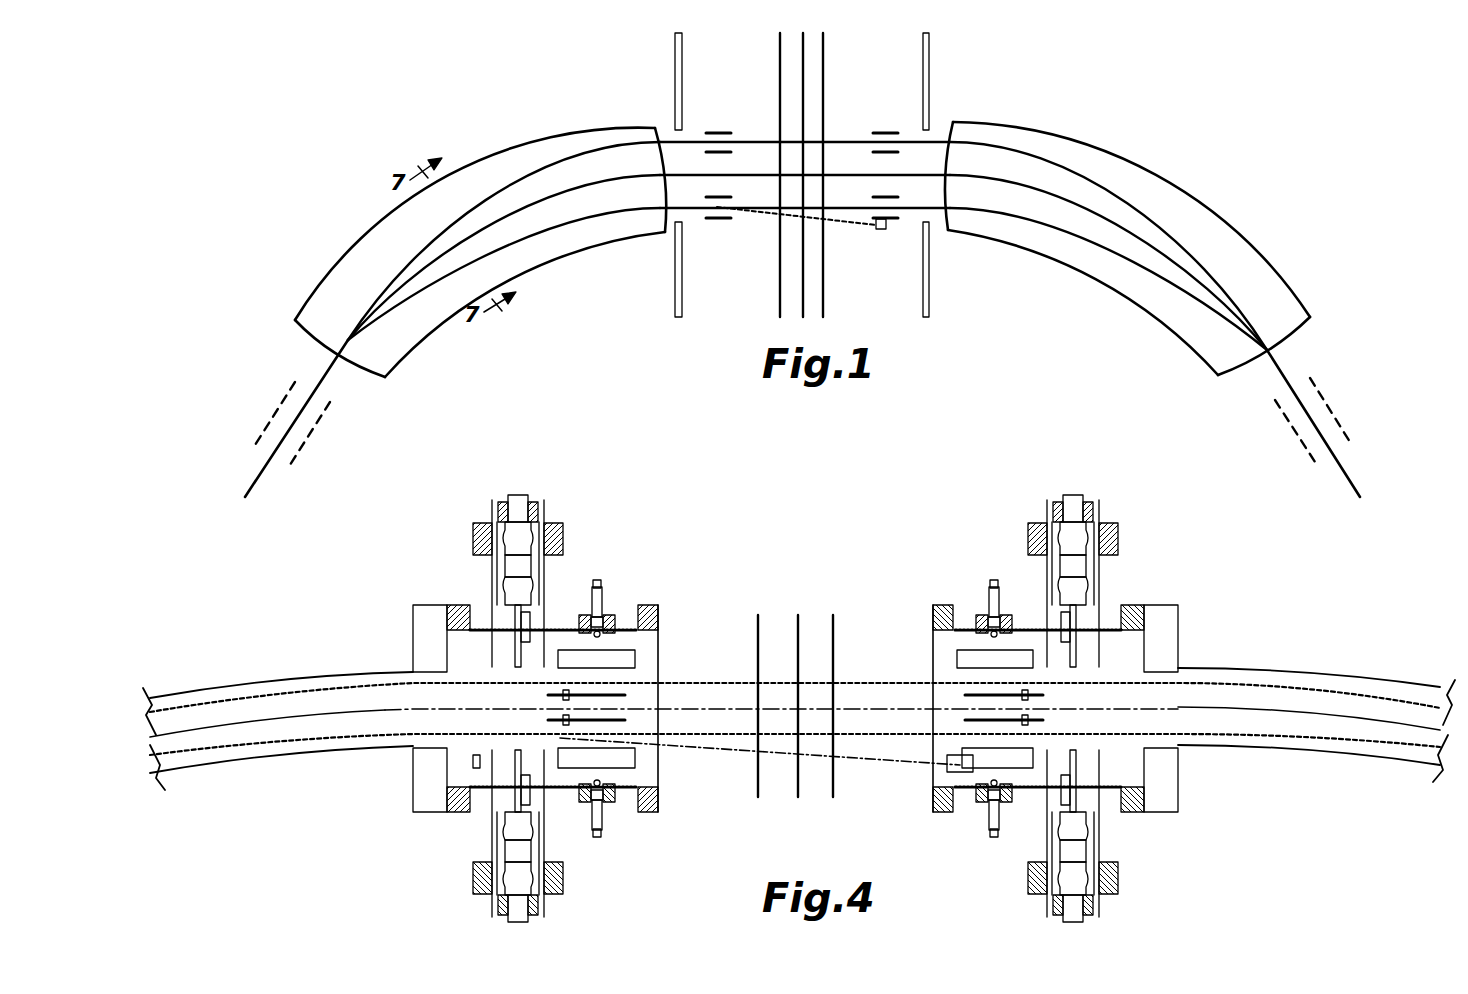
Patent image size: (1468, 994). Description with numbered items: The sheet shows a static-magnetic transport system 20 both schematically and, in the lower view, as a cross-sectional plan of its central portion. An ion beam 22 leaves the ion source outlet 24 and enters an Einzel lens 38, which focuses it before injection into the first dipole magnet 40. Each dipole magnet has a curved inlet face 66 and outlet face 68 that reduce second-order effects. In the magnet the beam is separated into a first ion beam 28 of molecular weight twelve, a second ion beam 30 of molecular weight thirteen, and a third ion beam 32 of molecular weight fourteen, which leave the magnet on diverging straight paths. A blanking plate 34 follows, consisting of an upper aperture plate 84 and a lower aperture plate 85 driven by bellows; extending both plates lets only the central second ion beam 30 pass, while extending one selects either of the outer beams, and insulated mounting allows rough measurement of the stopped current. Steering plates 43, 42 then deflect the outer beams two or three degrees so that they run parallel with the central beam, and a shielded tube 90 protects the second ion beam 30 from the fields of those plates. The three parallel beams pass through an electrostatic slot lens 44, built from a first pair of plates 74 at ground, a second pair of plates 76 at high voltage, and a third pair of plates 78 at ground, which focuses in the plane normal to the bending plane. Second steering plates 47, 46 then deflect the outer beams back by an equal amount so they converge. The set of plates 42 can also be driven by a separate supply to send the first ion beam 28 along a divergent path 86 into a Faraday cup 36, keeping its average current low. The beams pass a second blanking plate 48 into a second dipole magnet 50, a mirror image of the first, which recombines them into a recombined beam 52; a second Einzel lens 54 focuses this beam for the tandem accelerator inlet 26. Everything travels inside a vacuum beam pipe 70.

In FIG. 1, the static-magnetic transport system 20 is at (425, 85).
In FIG. 1, the ion beam 22 is at (265, 460).
In FIG. 1, the ion source outlet 24 is at (248, 497).
In FIG. 1, the tandem accelerator inlet 26 is at (1350, 477).
In FIG. 1, the first ion beam 28 is at (512, 235).
In FIG. 4, the first ion beam 28 is at (370, 738).
In FIG. 1, the second ion beam 30 is at (596, 176).
In FIG. 4, the second ion beam 30 is at (385, 710).
In FIG. 1, the third ion beam 32 is at (495, 182).
In FIG. 4, the third ion beam 32 is at (215, 700).
In FIG. 1, the blanking plate 34 is at (675, 54).
In FIG. 4, the blanking plate 34 is at (514, 495).
In FIG. 1, the Faraday cup 36 is at (880, 230).
In FIG. 4, the Faraday cup 36 is at (958, 775).
In FIG. 1, the Einzel lens 38 is at (312, 438).
In FIG. 1, the first dipole magnet 40 is at (428, 330).
In FIG. 1, the steering plates 42 is at (720, 133).
In FIG. 4, the steering plates 42 is at (622, 668).
In FIG. 1, the steering plates 43 is at (717, 226).
In FIG. 4, the steering plates 43 is at (560, 748).
In FIG. 1, the electrostatic slot lens 44 is at (780, 282).
In FIG. 4, the electrostatic slot lens 44 is at (798, 615).
In FIG. 1, the second steering plates 46 is at (880, 133).
In FIG. 4, the second steering plates 46 is at (1005, 690).
In FIG. 1, the second steering plates 47 is at (893, 225).
In FIG. 4, the second steering plates 47 is at (1000, 742).
In FIG. 1, the second blanking plate 48 is at (930, 54).
In FIG. 1, the second dipole magnet 50 is at (1095, 265).
In FIG. 1, the recombined beam 52 is at (1283, 376).
In FIG. 1, the second Einzel lens 54 is at (1335, 408).
In FIG. 1, the inlet face 66 is at (378, 377).
In FIG. 1, the outlet face 68 is at (662, 225).
In FIG. 4, the vacuum beam pipe 70 is at (1310, 668).
In FIG. 4, the first pair of plates 74 is at (758, 797).
In FIG. 4, the second pair of plates 76 is at (798, 797).
In FIG. 4, the third pair of plates 78 is at (833, 797).
In FIG. 4, the upper aperture plate 84 is at (510, 668).
In FIG. 4, the lower aperture plate 85 is at (495, 775).
In FIG. 1, the divergent path 86 is at (852, 222).
In FIG. 4, the divergent path 86 is at (880, 760).
In FIG. 4, the shielded tube 90 is at (548, 685).